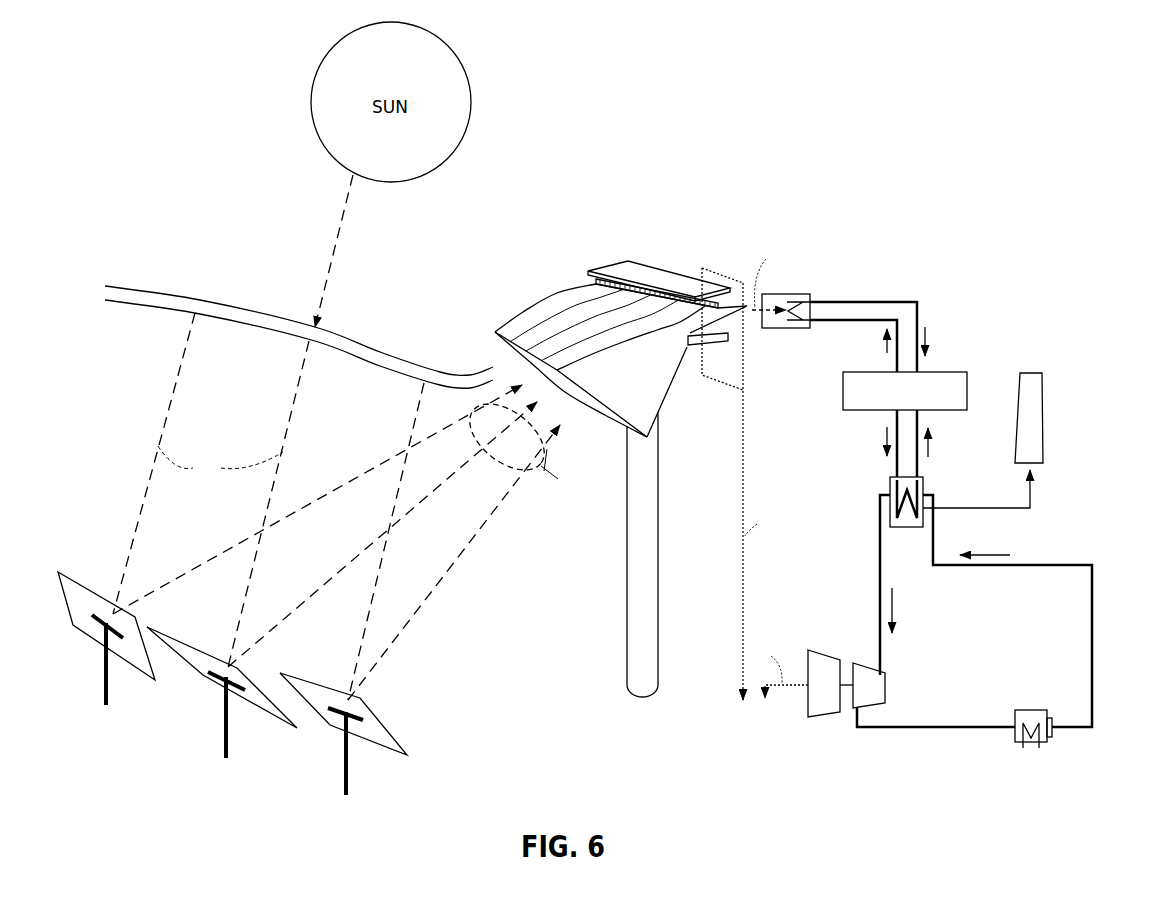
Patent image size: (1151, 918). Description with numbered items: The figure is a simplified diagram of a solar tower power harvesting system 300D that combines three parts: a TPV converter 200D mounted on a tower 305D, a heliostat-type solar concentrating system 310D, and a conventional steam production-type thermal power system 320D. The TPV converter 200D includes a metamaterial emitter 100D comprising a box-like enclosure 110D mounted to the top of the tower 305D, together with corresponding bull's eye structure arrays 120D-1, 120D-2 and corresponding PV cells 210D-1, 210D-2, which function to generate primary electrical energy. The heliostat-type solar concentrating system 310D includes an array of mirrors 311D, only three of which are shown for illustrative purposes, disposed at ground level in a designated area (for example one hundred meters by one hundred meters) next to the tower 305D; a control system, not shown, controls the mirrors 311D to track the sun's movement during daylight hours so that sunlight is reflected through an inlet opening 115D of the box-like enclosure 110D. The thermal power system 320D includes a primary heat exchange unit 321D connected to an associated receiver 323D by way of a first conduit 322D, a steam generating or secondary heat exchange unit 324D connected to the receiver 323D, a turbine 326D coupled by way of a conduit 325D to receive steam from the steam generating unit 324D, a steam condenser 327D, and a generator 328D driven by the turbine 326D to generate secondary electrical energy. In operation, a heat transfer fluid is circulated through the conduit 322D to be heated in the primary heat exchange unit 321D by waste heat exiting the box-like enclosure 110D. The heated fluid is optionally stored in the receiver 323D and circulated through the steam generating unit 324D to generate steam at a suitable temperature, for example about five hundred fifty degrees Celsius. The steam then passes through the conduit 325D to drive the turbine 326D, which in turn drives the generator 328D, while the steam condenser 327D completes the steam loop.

The solar tower power harvesting system 300D is at (166, 224).
The heliostat-type solar concentrating system 310D is at (108, 565).
The mirrors 311D is at (323, 727).
The metamaterial emitter 100D is at (624, 349).
The box-like enclosure 110D is at (502, 316).
The inlet opening 115D is at (585, 403).
The bull's eye structure array 120D-1 is at (603, 282).
The PV cell 210D-1 is at (603, 268).
The bull's eye structure array 120D-2 is at (731, 334).
The PV cell 210D-2 is at (713, 346).
The TPV converter 200D is at (658, 250).
The tower 305D is at (624, 608).
The thermal power system 320D is at (909, 475).
The primary heat exchange unit 321D is at (790, 292).
The first conduit 322D is at (878, 318).
The receiver 323D is at (993, 401).
The steam generating unit 324D is at (886, 488).
The conduit 325D is at (877, 578).
The turbine 326D is at (889, 690).
The steam condenser 327D is at (1049, 708).
The generator 328D is at (825, 651).